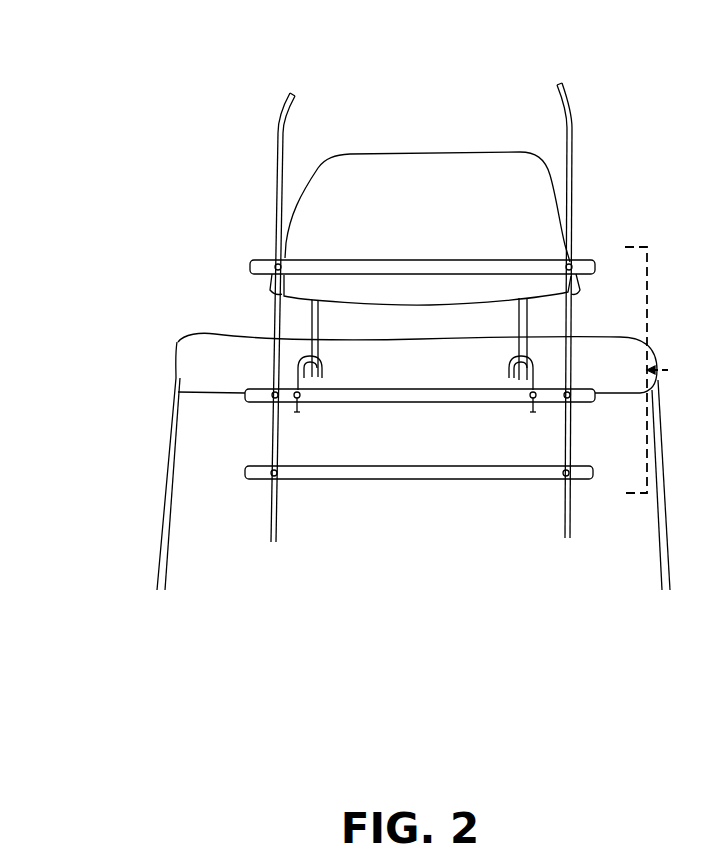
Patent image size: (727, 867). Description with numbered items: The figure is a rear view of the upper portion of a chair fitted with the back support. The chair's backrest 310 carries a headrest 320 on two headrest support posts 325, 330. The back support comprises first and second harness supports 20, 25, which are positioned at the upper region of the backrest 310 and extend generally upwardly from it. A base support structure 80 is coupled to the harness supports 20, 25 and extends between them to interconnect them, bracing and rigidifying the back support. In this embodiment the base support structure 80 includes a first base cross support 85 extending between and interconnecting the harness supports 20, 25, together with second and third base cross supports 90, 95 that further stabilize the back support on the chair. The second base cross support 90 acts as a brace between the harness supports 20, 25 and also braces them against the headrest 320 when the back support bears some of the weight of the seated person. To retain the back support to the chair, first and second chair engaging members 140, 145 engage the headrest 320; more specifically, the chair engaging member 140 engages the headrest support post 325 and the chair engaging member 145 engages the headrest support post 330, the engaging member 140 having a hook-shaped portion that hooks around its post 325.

The first harness support 20 is at (280, 130).
The second harness support 25 is at (572, 133).
The base support structure 80 is at (666, 370).
The first base cross support 85 is at (258, 398).
The second base cross support 90 is at (262, 266).
The third base cross support 95 is at (258, 472).
The first chair engaging member 140 is at (297, 412).
The second chair engaging member 145 is at (533, 412).
The backrest 310 is at (163, 527).
The headrest 320 is at (404, 215).
The headrest support post 325 is at (315, 320).
The headrest support post 330 is at (524, 322).